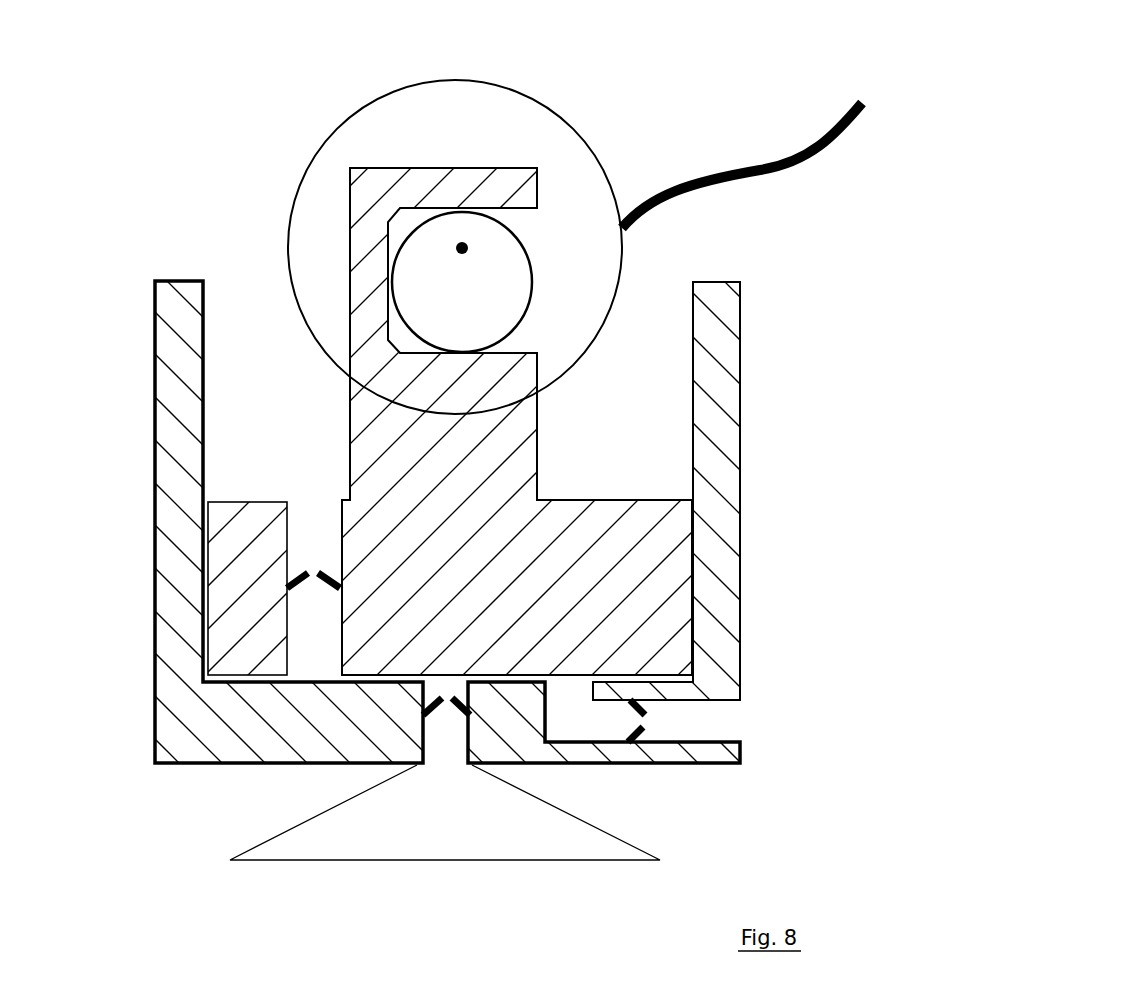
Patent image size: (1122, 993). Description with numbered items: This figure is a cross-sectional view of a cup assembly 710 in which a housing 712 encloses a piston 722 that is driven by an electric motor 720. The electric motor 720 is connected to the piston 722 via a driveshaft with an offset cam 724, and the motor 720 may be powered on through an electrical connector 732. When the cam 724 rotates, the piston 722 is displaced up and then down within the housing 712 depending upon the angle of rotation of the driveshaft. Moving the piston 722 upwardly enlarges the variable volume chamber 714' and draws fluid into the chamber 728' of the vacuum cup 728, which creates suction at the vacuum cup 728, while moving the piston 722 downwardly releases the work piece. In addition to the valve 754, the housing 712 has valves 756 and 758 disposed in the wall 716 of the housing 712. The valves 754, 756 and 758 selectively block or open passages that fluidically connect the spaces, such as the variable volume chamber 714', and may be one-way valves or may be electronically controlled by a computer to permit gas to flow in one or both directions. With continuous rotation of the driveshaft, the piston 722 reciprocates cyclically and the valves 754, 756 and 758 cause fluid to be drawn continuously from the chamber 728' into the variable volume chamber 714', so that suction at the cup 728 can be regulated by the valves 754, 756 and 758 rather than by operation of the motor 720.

The cup assembly 710 is at (818, 325).
The housing 712 is at (143, 594).
The variable volume chamber 714' is at (596, 748).
The wall 716 is at (663, 763).
The electric motor 720 is at (535, 97).
The piston 722 is at (350, 408).
The offset cam 724 is at (411, 235).
The vacuum cup 728 is at (411, 812).
The chamber 728' is at (360, 886).
The electrical connector 732 is at (786, 162).
The valve 754 is at (302, 573).
The valve 756 is at (647, 728).
The valve 758 is at (438, 712).